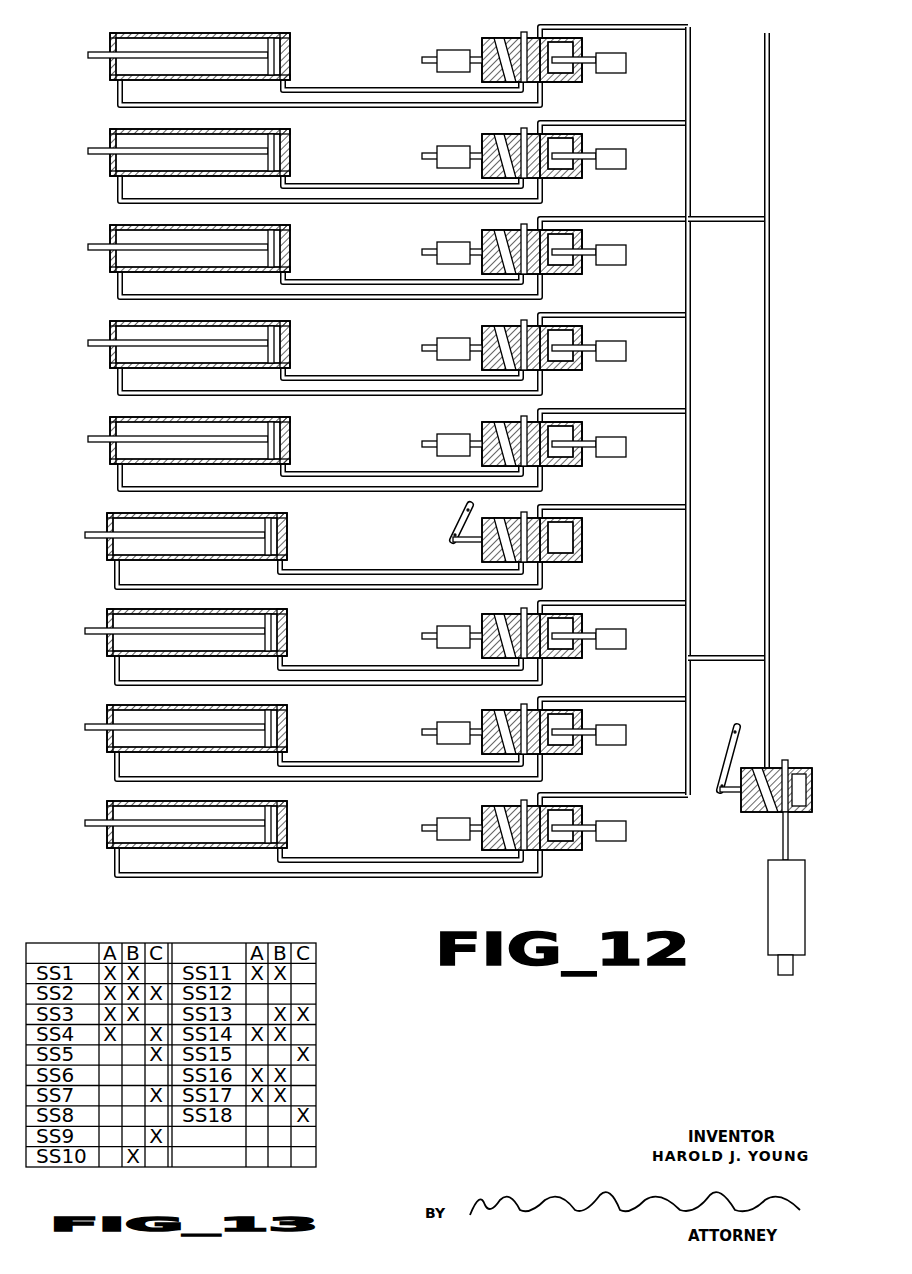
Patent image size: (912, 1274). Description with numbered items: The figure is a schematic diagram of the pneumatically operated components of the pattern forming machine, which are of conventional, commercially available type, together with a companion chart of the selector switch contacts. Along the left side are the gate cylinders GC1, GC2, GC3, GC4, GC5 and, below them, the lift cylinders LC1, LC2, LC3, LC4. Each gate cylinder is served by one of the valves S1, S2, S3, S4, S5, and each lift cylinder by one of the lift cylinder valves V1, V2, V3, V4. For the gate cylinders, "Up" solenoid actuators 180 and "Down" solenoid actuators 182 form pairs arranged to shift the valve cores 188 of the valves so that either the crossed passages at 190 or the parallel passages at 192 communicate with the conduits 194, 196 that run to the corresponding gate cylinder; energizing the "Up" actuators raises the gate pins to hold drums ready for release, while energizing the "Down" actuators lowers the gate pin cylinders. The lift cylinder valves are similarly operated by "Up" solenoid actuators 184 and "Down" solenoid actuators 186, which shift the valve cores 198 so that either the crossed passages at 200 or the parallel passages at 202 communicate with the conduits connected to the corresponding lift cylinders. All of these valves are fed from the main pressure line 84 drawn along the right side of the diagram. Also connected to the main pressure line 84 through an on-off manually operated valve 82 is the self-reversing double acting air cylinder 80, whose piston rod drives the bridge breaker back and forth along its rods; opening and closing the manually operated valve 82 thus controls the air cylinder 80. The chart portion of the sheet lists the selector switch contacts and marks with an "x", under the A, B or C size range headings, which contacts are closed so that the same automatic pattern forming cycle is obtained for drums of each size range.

The self-reversing double acting air cylinder 80 is at (775, 898).
The on-off manually operated valve 82 is at (803, 767).
The main pressure line 84 is at (767, 117).
The "Up" solenoid actuators 180 is at (452, 17).
The "Down" solenoid actuators 182 is at (613, 269).
The "Up" solenoid actuators 184 is at (431, 717).
The "Down" solenoid actuators 186 is at (612, 749).
The valve cores 188 is at (552, 17).
The crossed passages 190 is at (493, 39).
The parallel passages 192 is at (545, 50).
The conduit 194 is at (372, 57).
The conduit 196 is at (376, 73).
The valve cores 198 is at (591, 674).
The crossed passages 200 is at (461, 681).
The parallel passages 202 is at (577, 700).
The gate pin cylinder GC1 is at (215, 0).
The gate pin cylinder GC2 is at (189, 139).
The gate pin cylinder GC3 is at (189, 235).
The gate pin cylinder GC4 is at (189, 331).
The gate cylinder GC5 is at (189, 427).
The lift cylinder LC1 is at (186, 523).
The lift cylinder LC2 is at (186, 619).
The lift cylinder LC3 is at (186, 715).
The lift cylinder LC4 is at (186, 811).
The valve S1 is at (507, 5).
The valve S2 is at (517, 142).
The valve S3 is at (517, 238).
The valve S4 is at (517, 334).
The valve S5 is at (517, 430).
The lift cylinder valve V1 is at (508, 542).
The lift cylinder valve V2 is at (510, 626).
The lift cylinder valve V3 is at (510, 722).
The lift cylinder valve V4 is at (510, 818).